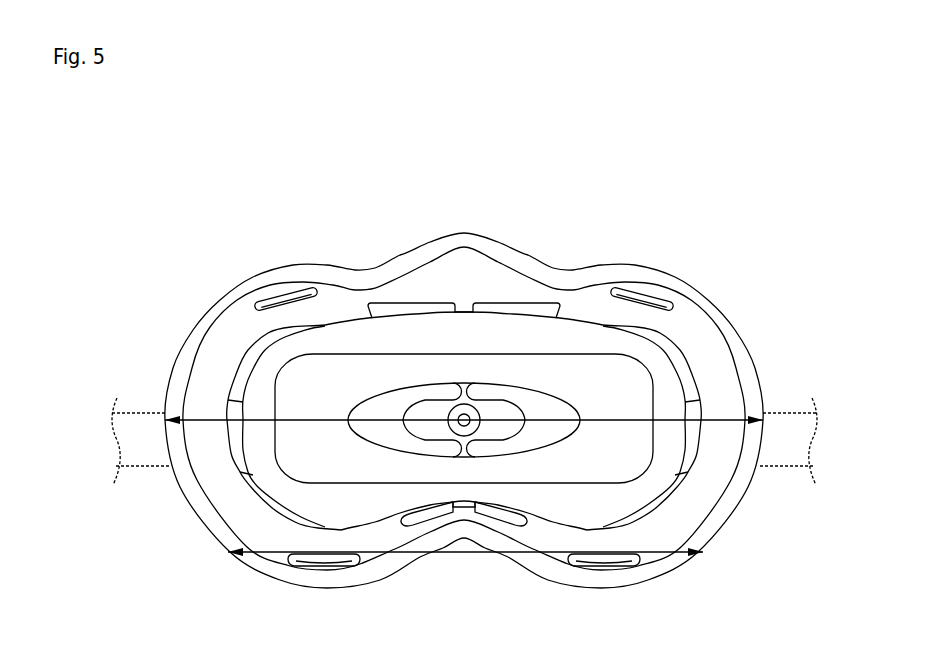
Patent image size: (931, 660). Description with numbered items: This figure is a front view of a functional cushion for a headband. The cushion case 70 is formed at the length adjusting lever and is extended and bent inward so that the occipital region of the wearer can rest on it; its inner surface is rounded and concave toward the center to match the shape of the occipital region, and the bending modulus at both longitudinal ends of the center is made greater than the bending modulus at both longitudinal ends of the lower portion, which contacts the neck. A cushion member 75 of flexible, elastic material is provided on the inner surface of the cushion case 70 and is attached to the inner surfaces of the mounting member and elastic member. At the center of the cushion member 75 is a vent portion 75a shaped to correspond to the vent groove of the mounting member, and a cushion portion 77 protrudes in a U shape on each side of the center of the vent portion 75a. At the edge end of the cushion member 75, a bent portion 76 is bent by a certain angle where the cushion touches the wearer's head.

The cushion case 70 is at (606, 226).
The cushion member 75 is at (227, 355).
The vent portion 75a is at (611, 393).
The bent portion 76 is at (390, 268).
The cushion portion 77 is at (421, 396).